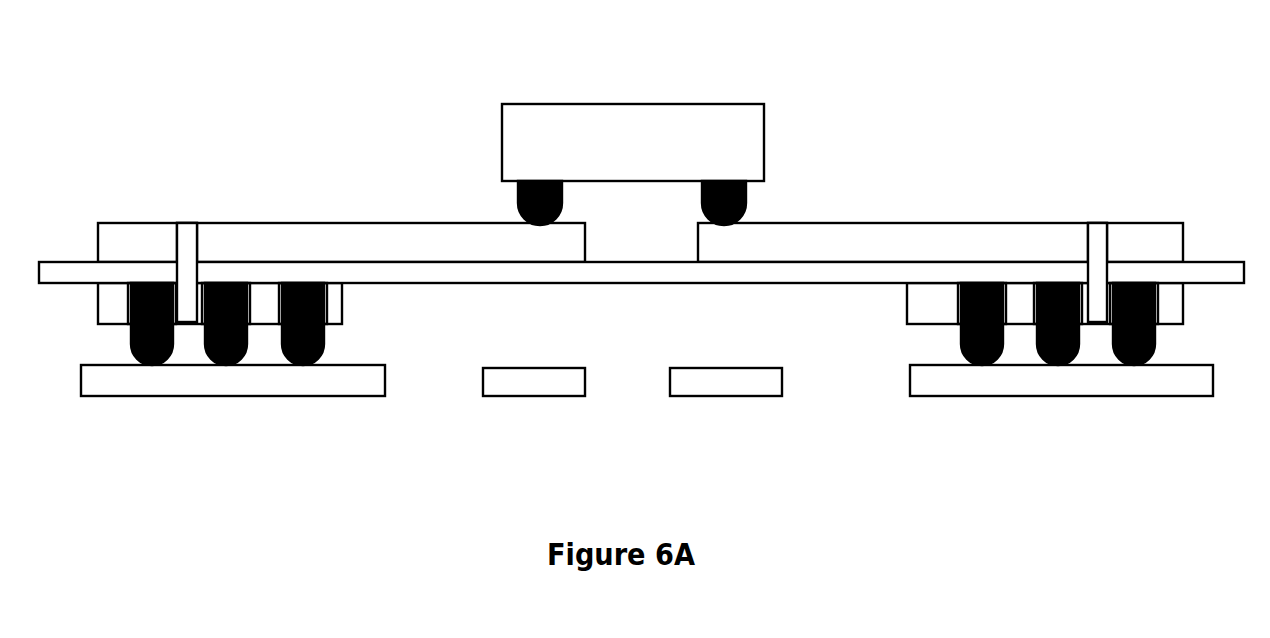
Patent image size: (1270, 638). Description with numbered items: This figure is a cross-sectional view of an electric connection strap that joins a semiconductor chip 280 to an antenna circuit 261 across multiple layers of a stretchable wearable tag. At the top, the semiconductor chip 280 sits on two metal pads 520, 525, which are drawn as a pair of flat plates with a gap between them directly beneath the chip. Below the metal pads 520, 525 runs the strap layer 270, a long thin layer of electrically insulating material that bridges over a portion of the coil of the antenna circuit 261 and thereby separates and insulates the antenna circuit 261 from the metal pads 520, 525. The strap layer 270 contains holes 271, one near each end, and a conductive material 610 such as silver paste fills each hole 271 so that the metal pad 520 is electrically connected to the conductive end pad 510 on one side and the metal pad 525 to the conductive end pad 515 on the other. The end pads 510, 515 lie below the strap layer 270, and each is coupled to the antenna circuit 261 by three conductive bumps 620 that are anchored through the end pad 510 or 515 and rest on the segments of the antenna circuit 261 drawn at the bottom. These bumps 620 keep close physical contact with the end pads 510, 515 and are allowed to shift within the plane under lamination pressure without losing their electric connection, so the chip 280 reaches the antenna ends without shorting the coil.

The semiconductor chip 280 is at (697, 128).
The metal pad 520 is at (388, 232).
The metal pad 525 is at (885, 233).
The conductive end pad 510 is at (343, 302).
The conductive end pad 515 is at (1167, 302).
The strap layer 270 is at (1192, 272).
The hole 271 is at (177, 245).
The conductive material 610 is at (187, 237).
The conductive bump 620 is at (293, 365).
The antenna circuit 261 is at (343, 385).